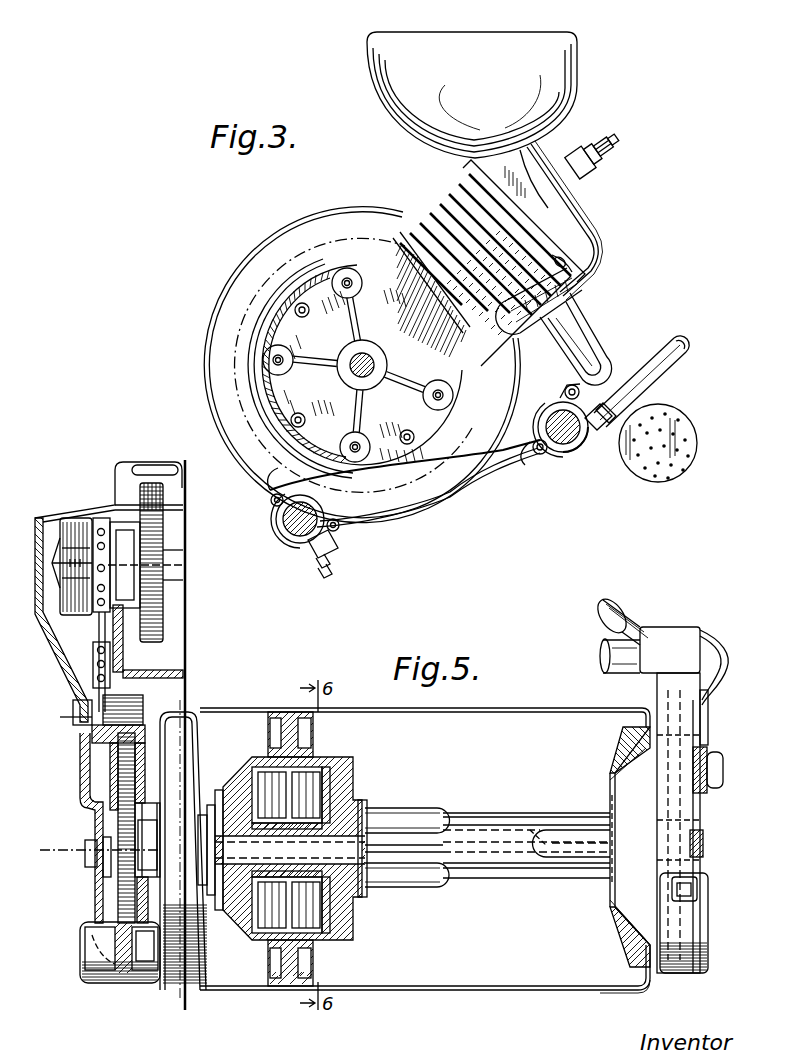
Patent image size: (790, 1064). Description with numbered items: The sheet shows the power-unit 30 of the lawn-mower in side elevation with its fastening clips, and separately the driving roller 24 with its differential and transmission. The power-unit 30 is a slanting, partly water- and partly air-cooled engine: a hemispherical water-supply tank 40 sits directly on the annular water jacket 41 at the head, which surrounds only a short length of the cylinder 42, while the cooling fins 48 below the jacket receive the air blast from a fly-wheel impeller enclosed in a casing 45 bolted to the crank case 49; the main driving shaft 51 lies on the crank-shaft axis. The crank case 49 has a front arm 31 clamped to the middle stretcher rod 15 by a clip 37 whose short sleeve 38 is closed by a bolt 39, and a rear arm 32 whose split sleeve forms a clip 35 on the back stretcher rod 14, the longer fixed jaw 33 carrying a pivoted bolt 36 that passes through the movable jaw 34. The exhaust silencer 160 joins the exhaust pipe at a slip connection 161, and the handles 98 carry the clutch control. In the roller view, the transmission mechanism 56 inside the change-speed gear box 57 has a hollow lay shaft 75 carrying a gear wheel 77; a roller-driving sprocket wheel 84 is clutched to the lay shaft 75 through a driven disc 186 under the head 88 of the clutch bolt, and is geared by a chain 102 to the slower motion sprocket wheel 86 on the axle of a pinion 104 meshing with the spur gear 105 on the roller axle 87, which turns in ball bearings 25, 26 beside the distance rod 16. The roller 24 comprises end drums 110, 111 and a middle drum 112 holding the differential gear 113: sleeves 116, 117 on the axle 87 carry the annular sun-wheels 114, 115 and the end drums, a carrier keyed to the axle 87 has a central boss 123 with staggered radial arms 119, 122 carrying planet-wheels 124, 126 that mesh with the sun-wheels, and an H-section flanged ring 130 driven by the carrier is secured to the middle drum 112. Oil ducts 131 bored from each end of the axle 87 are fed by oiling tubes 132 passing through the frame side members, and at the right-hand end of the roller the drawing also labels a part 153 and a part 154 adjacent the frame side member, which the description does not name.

In FIG. 3, the water-supply tank 40 is at (528, 128).
In FIG. 3, the power-unit 30 is at (468, 175).
In FIG. 3, the cylinder 42 is at (455, 215).
In FIG. 3, the casing 45 is at (358, 216).
In FIG. 3, the crank case 49 is at (300, 320).
In FIG. 3, the water jacket 41 is at (572, 240).
In FIG. 3, the cooling fins 48 is at (566, 262).
In FIG. 3, the main driving shaft 51 is at (350, 370).
In FIG. 3, the fixed jaw 33 is at (568, 390).
In FIG. 3, the handles 98 is at (657, 354).
In FIG. 5, the handles 98 is at (617, 608).
In FIG. 3, the slip connection 161 is at (597, 352).
In FIG. 3, the front arm 31 is at (268, 482).
In FIG. 3, the clip 37 is at (271, 503).
In FIG. 3, the sleeve 38 is at (276, 522).
In FIG. 3, the middle stretcher rod 15 is at (282, 534).
In FIG. 3, the bolt 39 is at (338, 548).
In FIG. 3, the rear arm 32 is at (483, 450).
In FIG. 3, the clip 35 is at (531, 458).
In FIG. 3, the back stretcher rod 14 is at (563, 446).
In FIG. 3, the movable jaw 34 is at (572, 452).
In FIG. 3, the bolt 36 is at (603, 440).
In FIG. 3, the engine exhaust silencer 160 is at (648, 470).
In FIG. 5, the head 88 is at (65, 516).
In FIG. 5, the driven disc 186 is at (78, 518).
In FIG. 5, the roller-driving sprocket wheel 84 is at (100, 520).
In FIG. 5, the gear wheel 77 is at (166, 527).
In FIG. 5, the lay shaft 75 is at (167, 560).
In FIG. 5, the chain 102 is at (99, 614).
In FIG. 5, the pinion 104 is at (165, 672).
In FIG. 5, the change-speed gear box 57 is at (66, 652).
In FIG. 5, the slower motion sprocket wheel 86 is at (95, 683).
In FIG. 5, the transmission mechanism 56 is at (80, 780).
In FIG. 5, the ball bearing 25 is at (118, 818).
In FIG. 5, the spur gear 105 is at (95, 893).
In FIG. 5, the end drum 111 is at (193, 977).
In FIG. 5, the planet-wheel 124 is at (270, 778).
In FIG. 5, the annular sun-wheel 115 is at (247, 777).
In FIG. 5, the sleeve 117 is at (204, 823).
In FIG. 5, the flanged ring 130 is at (314, 727).
In FIG. 5, the radial arm 119 is at (326, 760).
In FIG. 5, the annular sun-wheel 114 is at (323, 777).
In FIG. 5, the central boss 123 is at (332, 810).
In FIG. 5, the axle 87 is at (327, 853).
In FIG. 5, the radial arm 122 is at (252, 935).
In FIG. 5, the planet-wheel 126 is at (340, 930).
In FIG. 5, the differential gear 113 is at (320, 950).
In FIG. 5, the middle drum 112 is at (415, 958).
In FIG. 5, the sleeve 116 is at (498, 818).
In FIG. 5, the oil duct 131 is at (530, 830).
In FIG. 5, the oiling tube 132 is at (563, 863).
In FIG. 5, the driving roller 24 is at (452, 704).
In FIG. 5, the nut 154 is at (698, 750).
In FIG. 5, the distance rod 16 is at (712, 785).
In FIG. 5, the ball bearing 26 is at (690, 816).
In FIG. 5, the end drum 110 is at (642, 988).
In FIG. 5, the bracket block 153 is at (690, 955).